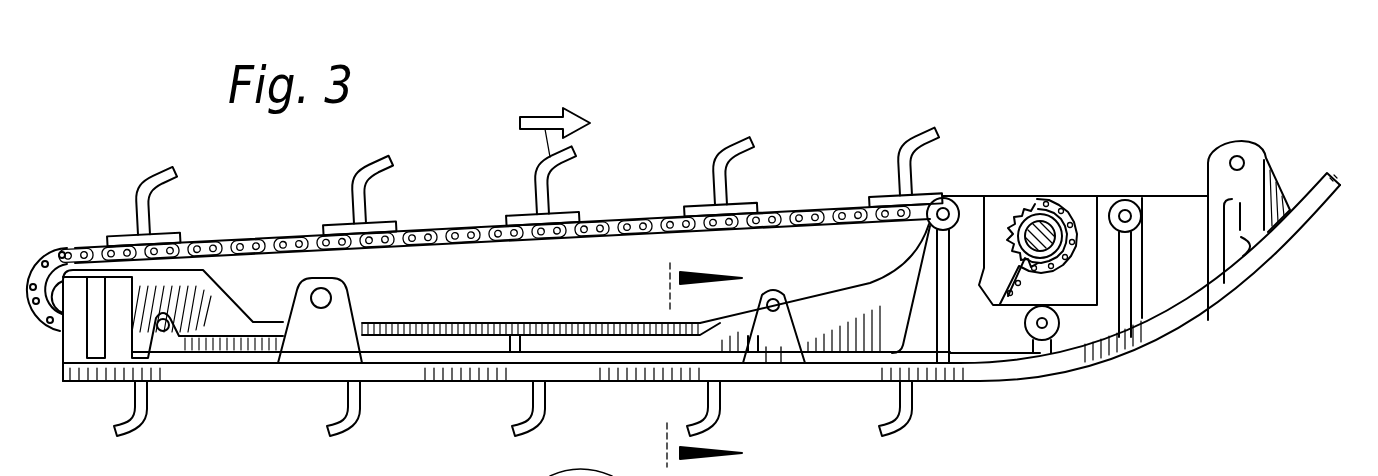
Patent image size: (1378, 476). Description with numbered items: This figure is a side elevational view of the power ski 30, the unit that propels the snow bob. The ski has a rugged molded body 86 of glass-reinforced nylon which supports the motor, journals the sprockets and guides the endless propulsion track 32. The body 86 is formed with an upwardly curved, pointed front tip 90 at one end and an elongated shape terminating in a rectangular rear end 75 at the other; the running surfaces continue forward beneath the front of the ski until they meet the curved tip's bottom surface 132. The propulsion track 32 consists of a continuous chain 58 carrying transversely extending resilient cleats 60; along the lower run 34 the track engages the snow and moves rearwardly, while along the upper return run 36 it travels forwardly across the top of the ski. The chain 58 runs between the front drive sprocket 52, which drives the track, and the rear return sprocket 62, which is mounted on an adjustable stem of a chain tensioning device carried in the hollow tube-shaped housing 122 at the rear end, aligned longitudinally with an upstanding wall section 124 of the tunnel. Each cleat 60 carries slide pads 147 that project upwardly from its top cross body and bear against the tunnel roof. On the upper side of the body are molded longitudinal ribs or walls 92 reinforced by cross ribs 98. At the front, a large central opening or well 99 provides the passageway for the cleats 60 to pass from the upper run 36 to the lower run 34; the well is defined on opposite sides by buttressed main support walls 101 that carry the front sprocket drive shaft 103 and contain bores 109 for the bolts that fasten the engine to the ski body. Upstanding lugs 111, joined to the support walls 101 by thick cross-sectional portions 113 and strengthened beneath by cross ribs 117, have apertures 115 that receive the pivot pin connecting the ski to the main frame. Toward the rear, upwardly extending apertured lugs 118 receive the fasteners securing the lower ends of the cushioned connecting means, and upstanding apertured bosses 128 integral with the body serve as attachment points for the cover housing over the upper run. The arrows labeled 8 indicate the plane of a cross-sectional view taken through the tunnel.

The section line 8- 8 is at (681, 365).
The power ski 30 is at (351, 187).
The endless propulsion track 32 is at (788, 207).
The lower run 34 is at (509, 409).
The upper return run 36 is at (429, 217).
The front drive sprocket 52 is at (1000, 216).
The continuous chain 58 is at (648, 190).
The resilient cleats 60 is at (724, 160).
The rear return sprocket 62 is at (50, 246).
The rectangular rear end 75 is at (100, 392).
The ski body 86 is at (927, 345).
The front tip 90 is at (1300, 230).
The rib or wall 92 is at (872, 296).
The cross ribs 98 is at (522, 345).
The central opening or well 99 is at (1096, 196).
The main support walls 101 is at (1088, 340).
The front sprocket drive shaft 103 is at (1046, 224).
The bores 109 is at (945, 197).
The upstanding lugs 111 is at (1212, 165).
The thick cross-sectional portions 113 is at (1174, 318).
The apertures 115 is at (1243, 159).
The cross ribs 117 is at (1262, 268).
The apertured lugs 118 is at (345, 297).
The hollow tube-shaped housing 122 is at (207, 293).
The upstanding wall section 124 is at (497, 296).
The apertured bosses 128 is at (169, 338).
The curved tip's bottom surface 132 is at (1204, 318).
The slide pads 147 is at (752, 196).